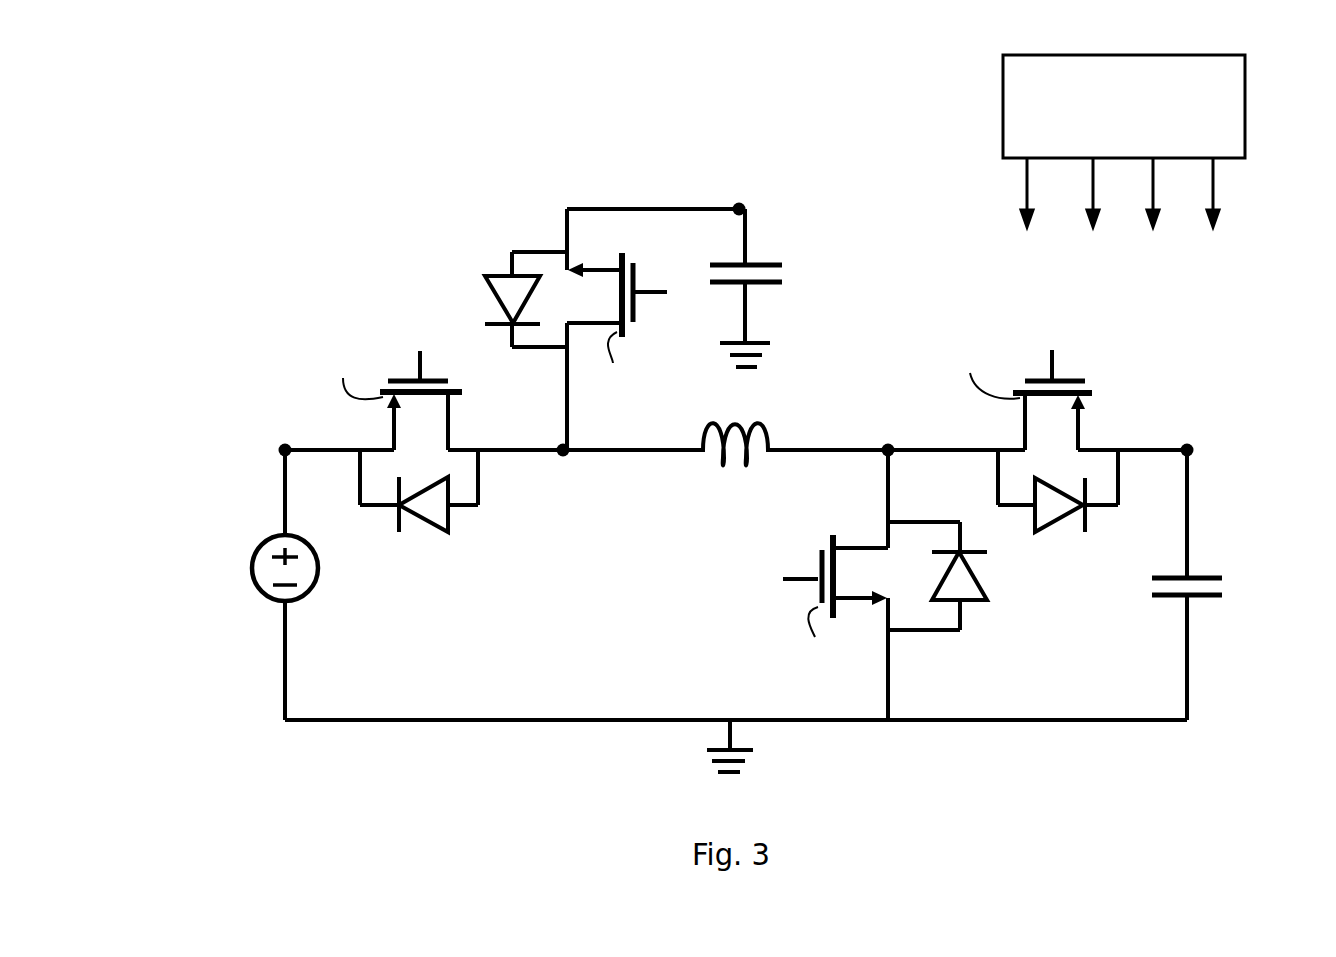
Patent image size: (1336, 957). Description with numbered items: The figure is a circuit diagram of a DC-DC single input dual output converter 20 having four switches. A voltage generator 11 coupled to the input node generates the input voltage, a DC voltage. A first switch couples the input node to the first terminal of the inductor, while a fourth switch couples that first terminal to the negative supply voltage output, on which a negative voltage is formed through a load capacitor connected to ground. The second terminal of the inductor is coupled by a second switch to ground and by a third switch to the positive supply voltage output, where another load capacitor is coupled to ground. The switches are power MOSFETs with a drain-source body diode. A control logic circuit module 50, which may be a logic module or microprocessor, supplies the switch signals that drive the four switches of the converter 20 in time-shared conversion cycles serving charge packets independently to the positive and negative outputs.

The voltage generator 11 is at (258, 540).
The DC-DC SIDO converter 20 is at (469, 222).
The control logic circuit module 50 is at (1018, 110).